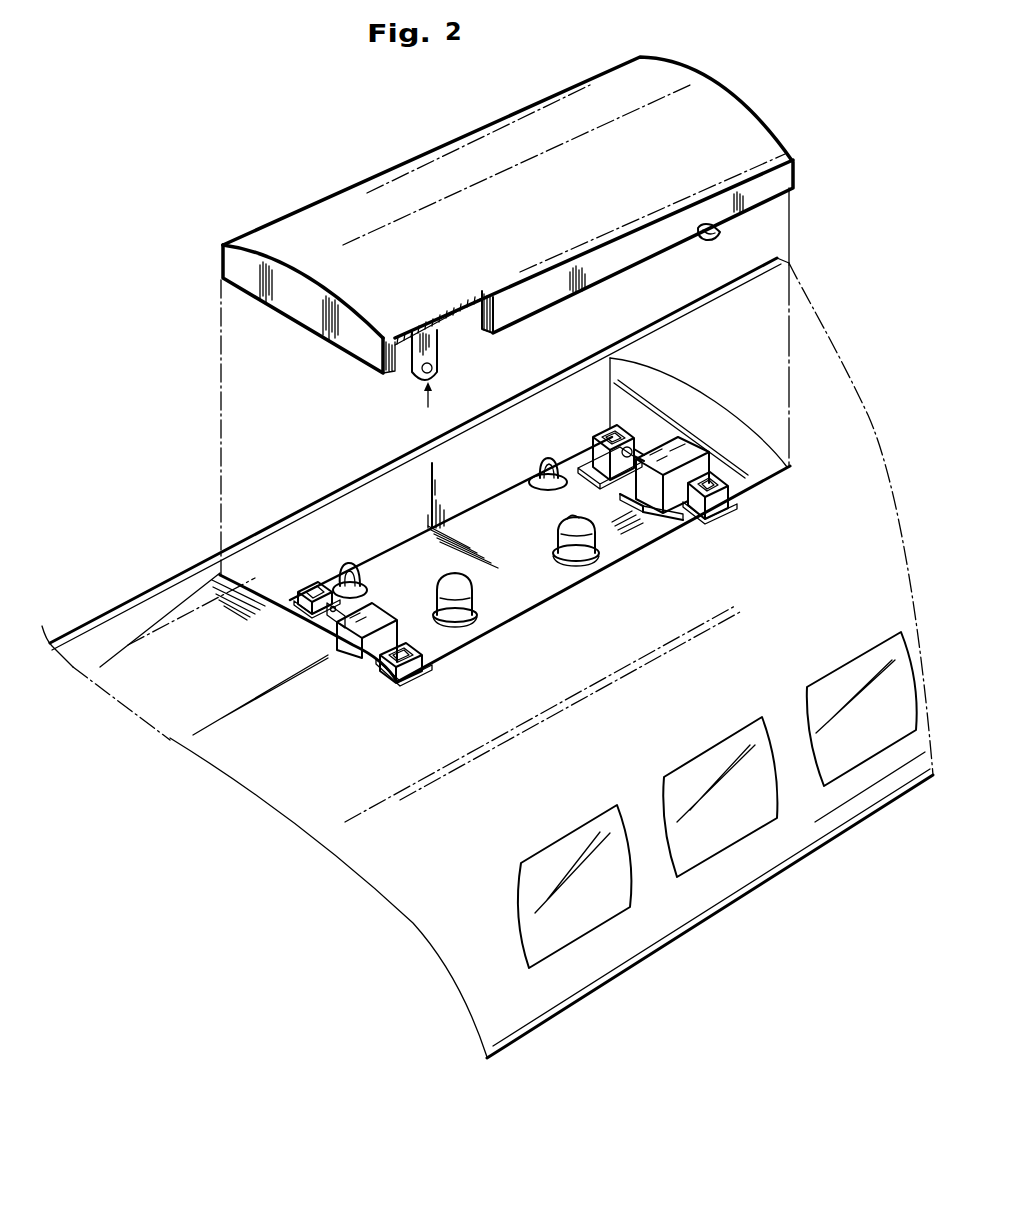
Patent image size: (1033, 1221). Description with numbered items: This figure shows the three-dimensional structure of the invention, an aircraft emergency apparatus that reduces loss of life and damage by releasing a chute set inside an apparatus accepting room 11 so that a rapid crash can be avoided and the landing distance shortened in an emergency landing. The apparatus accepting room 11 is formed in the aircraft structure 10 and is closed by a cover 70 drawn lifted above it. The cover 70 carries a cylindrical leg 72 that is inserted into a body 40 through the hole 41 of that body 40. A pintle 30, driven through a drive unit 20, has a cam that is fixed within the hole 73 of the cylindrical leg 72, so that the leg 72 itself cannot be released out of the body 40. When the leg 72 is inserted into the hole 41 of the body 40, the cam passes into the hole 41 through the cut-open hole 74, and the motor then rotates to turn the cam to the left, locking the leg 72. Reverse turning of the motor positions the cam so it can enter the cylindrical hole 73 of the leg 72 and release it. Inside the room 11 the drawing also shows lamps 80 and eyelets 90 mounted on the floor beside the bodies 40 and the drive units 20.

The container body 10 is at (145, 592).
The apparatus accepting room 11 is at (393, 503).
The box component 20 is at (369, 643).
The pintle 30 is at (327, 611).
The body 40 is at (306, 582).
The hole 41 is at (301, 585).
The cover 70 is at (325, 220).
The leg 72 is at (721, 232).
The hole 73 is at (437, 366).
The cut-open hole 74 is at (432, 403).
The lamp 80 is at (475, 594).
The eyelet 90 is at (343, 560).